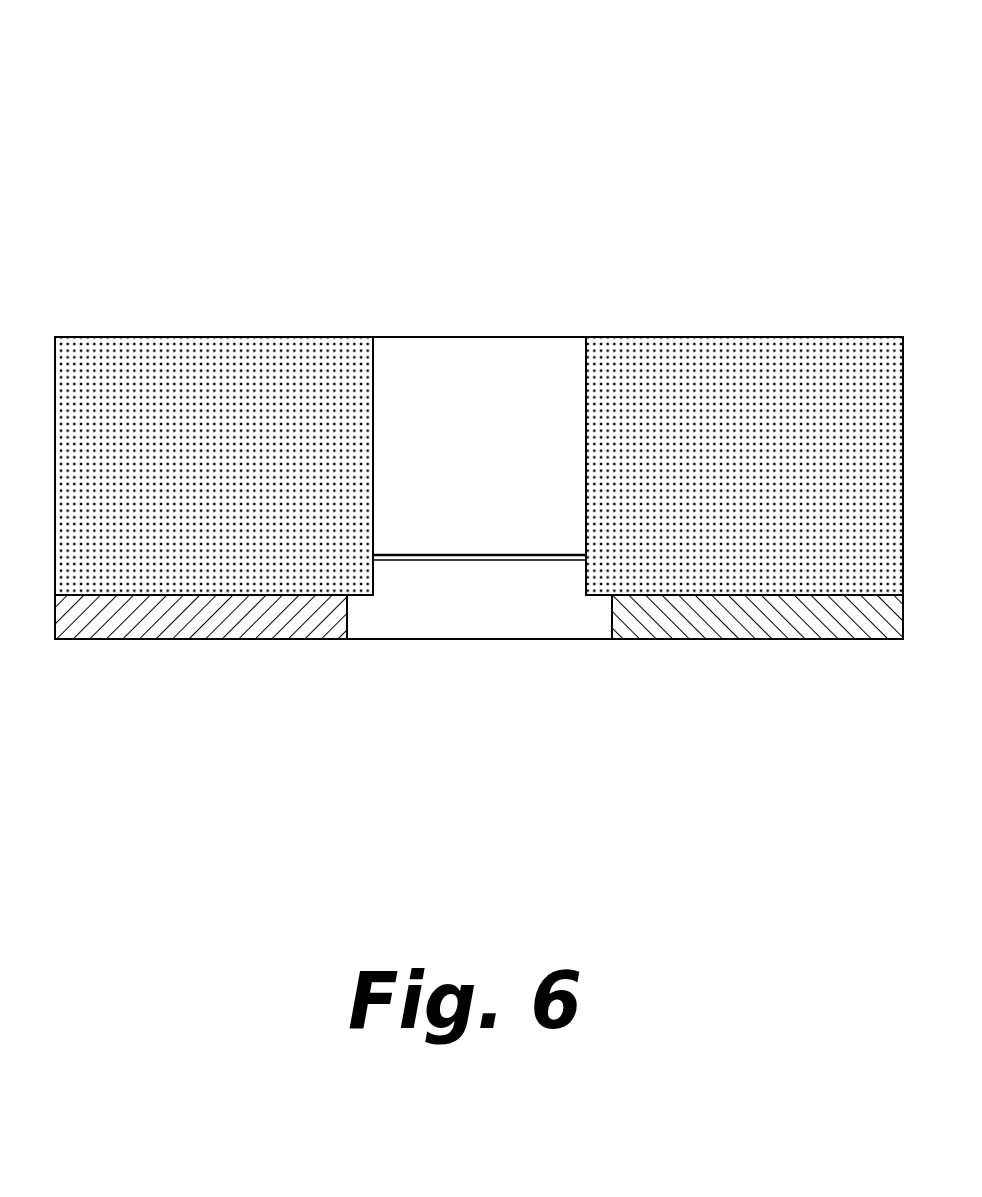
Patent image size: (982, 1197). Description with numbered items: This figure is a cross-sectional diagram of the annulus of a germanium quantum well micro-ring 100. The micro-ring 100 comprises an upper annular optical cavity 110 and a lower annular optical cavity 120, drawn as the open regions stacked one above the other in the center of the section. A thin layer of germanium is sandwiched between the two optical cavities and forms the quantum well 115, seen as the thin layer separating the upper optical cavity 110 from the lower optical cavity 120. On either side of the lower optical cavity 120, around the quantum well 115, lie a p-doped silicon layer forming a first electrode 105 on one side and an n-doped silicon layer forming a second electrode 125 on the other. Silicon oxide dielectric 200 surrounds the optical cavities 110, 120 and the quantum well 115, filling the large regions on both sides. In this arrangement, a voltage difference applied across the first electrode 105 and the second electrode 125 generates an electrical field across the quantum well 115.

The micro-ring 100 is at (316, 140).
The first electrode 105 is at (157, 620).
The upper annular optical cavity 110 is at (503, 360).
The quantum well 115 is at (449, 558).
The lower annular optical cavity 120 is at (530, 598).
The second electrode 125 is at (790, 625).
The silicon oxide dielectric 200 is at (127, 362).